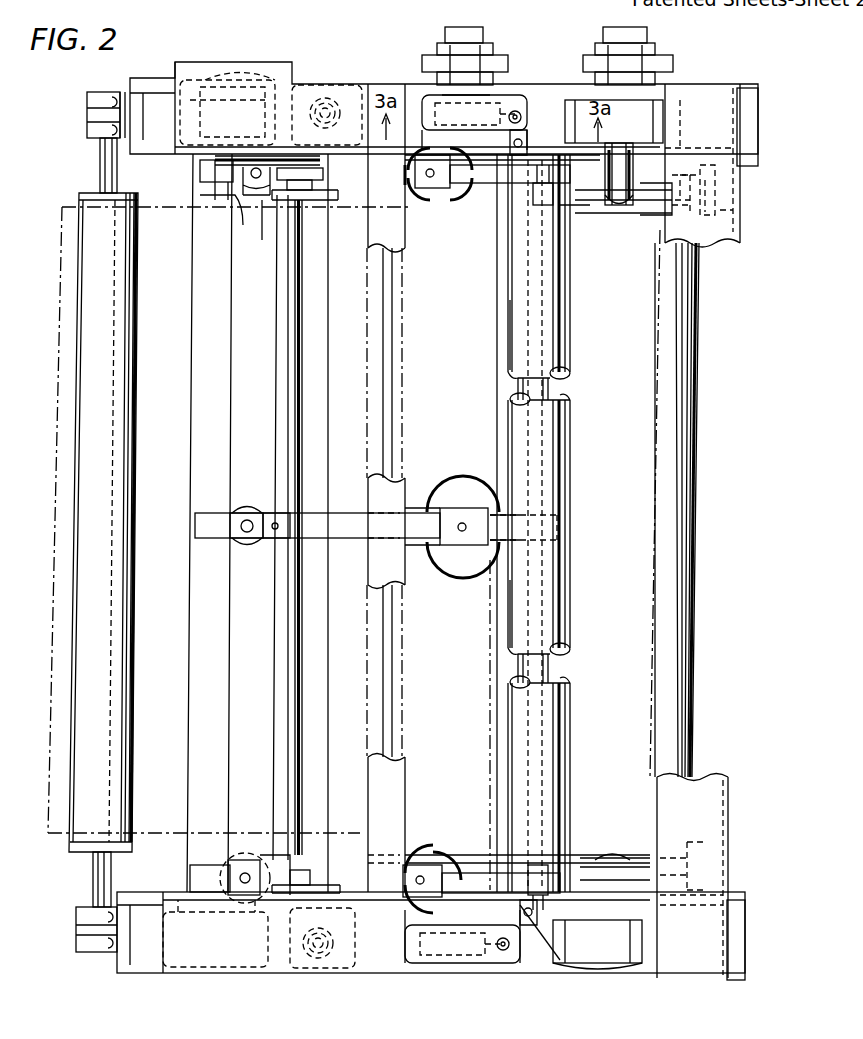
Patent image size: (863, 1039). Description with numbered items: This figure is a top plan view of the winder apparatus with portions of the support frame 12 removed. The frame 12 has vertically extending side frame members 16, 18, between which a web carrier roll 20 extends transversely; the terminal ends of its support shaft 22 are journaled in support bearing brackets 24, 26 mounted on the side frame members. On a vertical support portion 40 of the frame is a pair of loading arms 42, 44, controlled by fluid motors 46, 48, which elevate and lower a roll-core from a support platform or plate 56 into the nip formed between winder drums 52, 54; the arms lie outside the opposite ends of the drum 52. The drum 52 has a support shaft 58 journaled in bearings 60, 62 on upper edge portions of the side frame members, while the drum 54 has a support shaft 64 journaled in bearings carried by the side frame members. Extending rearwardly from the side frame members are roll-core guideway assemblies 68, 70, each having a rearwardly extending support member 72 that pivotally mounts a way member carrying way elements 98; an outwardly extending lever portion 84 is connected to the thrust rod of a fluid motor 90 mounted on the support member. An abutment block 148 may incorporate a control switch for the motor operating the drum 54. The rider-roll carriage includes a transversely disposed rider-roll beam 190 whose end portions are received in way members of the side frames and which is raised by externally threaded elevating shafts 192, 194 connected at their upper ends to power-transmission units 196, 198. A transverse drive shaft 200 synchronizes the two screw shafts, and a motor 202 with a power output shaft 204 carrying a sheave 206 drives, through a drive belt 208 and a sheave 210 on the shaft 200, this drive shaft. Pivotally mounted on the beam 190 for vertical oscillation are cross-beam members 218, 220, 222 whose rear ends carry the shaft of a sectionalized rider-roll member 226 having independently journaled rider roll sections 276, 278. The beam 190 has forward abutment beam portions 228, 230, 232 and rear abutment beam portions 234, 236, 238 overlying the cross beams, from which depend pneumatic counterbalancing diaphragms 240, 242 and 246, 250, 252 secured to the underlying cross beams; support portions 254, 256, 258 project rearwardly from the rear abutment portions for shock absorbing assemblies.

The support frame 12 is at (318, 72).
The side frame member 16 is at (163, 973).
The side frame member 18 is at (370, 85).
The web carrier roll 20 is at (93, 522).
The support shaft 22 is at (100, 178).
The support bearing bracket 24 is at (76, 940).
The support bearing bracket 26 is at (87, 128).
The vertical support portion 40 is at (742, 226).
The loading arm 42 is at (572, 870).
The loading arm 44 is at (585, 190).
The fluid motor 46 is at (650, 868).
The fluid motor 48 is at (660, 205).
The winder drum 52 is at (627, 510).
The winder drum 54 is at (472, 523).
The support platform or plate 56 is at (707, 245).
The support shaft 58 is at (655, 172).
The bearing 60 is at (597, 944).
The bearing 62 is at (614, 120).
The support shaft 64 is at (530, 194).
The roll-core guideway assembly 68 is at (470, 963).
The roll-core guideway assembly 70 is at (498, 82).
The support member 72 is at (527, 100).
The lever portion 84 is at (521, 112).
The fluid motor 90 is at (440, 105).
The way element 98 is at (530, 125).
The abutment block 148 is at (420, 190).
The rider-roll beam 190 is at (328, 640).
The externally threaded elevating shaft 192 is at (330, 965).
The externally threaded elevating shaft 194 is at (333, 88).
The power-transmission unit 196 is at (255, 968).
The power-transmission unit 198 is at (295, 78).
The drive shaft 200 is at (290, 400).
The motor 202 is at (240, 92).
The power output shaft 204 is at (250, 195).
The sheave 206 is at (233, 180).
The drive belt 208 is at (262, 200).
The sheave 210 is at (323, 170).
The cross-beam member 218 is at (527, 874).
The cross-beam member 220 is at (505, 510).
The cross-beam member 222 is at (502, 170).
The rider-roll member 226 is at (572, 418).
The abutment beam portion 228 is at (255, 860).
The abutment beam portion 230 is at (412, 865).
The abutment beam portion 232 is at (270, 545).
The abutment beam portion 234 is at (417, 548).
The abutment beam portion 236 is at (290, 200).
The abutment beam portion 238 is at (410, 215).
The pneumatic counterbalancing diaphragm 240 is at (240, 858).
The pneumatic counterbalancing diaphragm 242 is at (435, 862).
The pneumatic counterbalancing diaphragm 246 is at (243, 228).
The pneumatic counterbalancing diaphragm 250 is at (248, 545).
The pneumatic counterbalancing diaphragm 252 is at (458, 492).
The support portion 254 is at (190, 875).
The support portion 256 is at (195, 528).
The support portion 258 is at (200, 170).
The rider roll section 276 is at (572, 578).
The rider roll section 278 is at (572, 345).